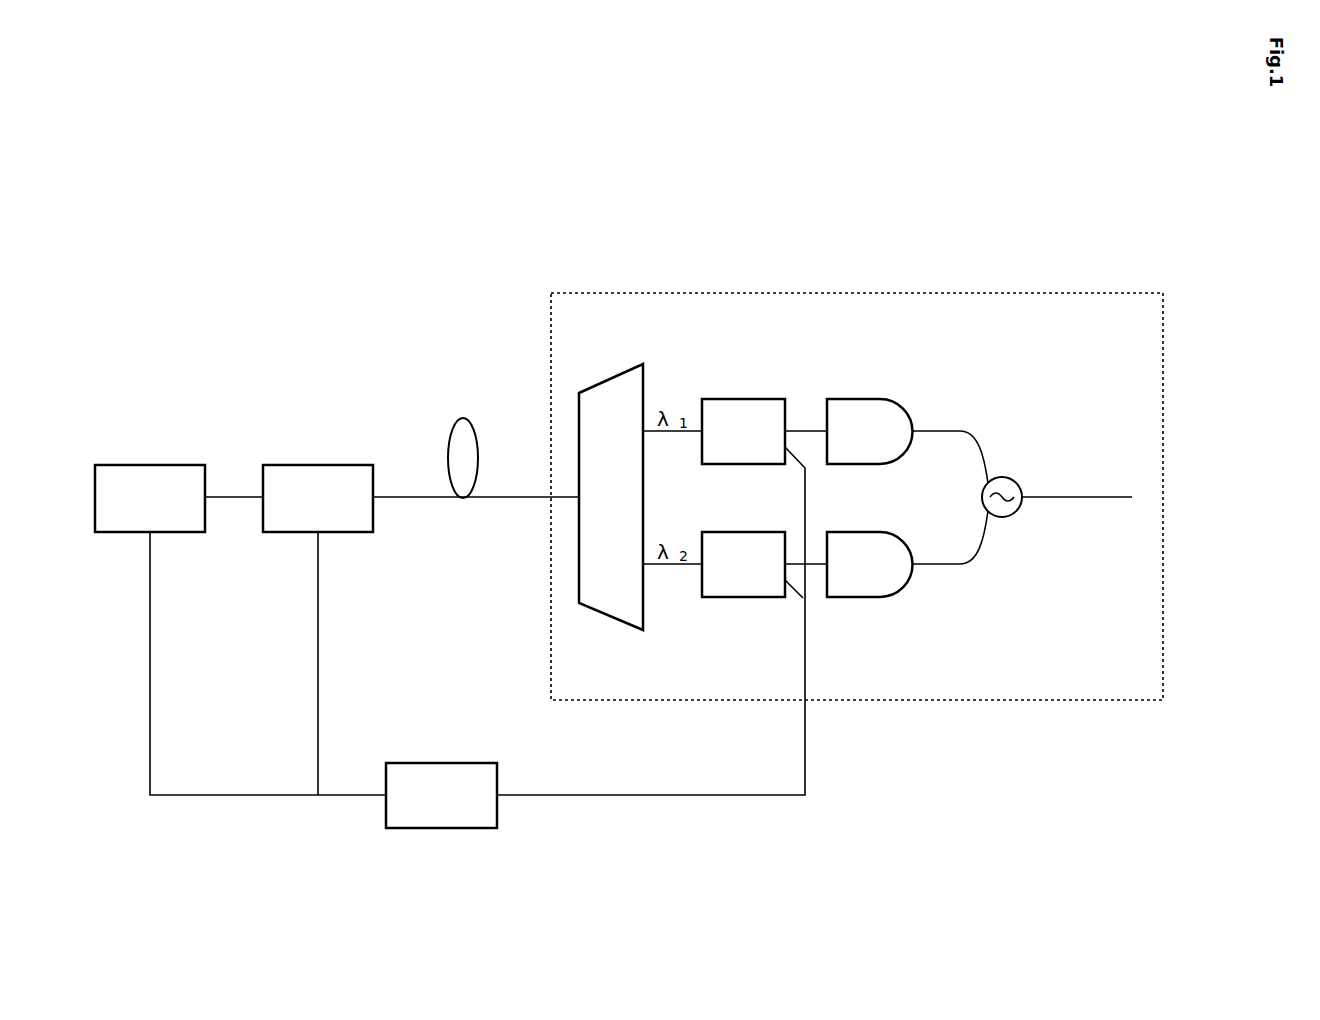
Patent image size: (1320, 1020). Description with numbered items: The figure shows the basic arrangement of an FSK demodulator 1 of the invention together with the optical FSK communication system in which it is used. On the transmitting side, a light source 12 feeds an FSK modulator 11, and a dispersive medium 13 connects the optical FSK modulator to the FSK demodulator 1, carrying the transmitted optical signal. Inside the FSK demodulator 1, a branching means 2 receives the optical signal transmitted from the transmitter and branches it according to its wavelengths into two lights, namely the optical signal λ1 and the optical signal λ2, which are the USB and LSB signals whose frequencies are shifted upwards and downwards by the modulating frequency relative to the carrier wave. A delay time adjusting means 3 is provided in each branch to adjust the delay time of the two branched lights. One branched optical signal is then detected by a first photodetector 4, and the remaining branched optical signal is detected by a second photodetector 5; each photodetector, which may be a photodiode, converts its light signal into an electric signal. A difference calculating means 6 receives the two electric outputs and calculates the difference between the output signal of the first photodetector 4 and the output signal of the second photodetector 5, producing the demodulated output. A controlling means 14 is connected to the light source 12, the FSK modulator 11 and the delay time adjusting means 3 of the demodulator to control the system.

The FSK demodulator 1 is at (870, 293).
The branching means 2 is at (610, 616).
The delay time adjusting means 3 is at (740, 399).
The first photodetector 4 is at (865, 399).
The second photodetector 5 is at (865, 597).
The difference calculating means 6 is at (1017, 483).
The FSK modulator 11 is at (325, 465).
The light source 12 is at (157, 465).
The dispersive medium 13 is at (463, 498).
The controlling means 14 is at (436, 828).